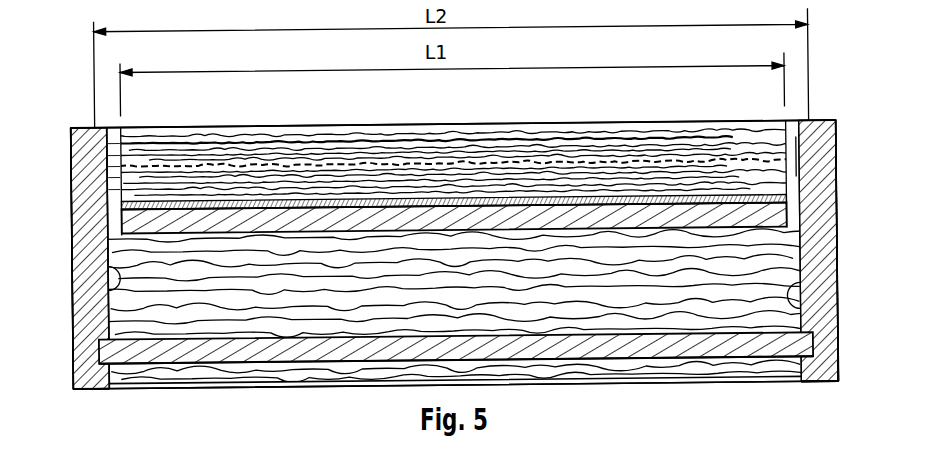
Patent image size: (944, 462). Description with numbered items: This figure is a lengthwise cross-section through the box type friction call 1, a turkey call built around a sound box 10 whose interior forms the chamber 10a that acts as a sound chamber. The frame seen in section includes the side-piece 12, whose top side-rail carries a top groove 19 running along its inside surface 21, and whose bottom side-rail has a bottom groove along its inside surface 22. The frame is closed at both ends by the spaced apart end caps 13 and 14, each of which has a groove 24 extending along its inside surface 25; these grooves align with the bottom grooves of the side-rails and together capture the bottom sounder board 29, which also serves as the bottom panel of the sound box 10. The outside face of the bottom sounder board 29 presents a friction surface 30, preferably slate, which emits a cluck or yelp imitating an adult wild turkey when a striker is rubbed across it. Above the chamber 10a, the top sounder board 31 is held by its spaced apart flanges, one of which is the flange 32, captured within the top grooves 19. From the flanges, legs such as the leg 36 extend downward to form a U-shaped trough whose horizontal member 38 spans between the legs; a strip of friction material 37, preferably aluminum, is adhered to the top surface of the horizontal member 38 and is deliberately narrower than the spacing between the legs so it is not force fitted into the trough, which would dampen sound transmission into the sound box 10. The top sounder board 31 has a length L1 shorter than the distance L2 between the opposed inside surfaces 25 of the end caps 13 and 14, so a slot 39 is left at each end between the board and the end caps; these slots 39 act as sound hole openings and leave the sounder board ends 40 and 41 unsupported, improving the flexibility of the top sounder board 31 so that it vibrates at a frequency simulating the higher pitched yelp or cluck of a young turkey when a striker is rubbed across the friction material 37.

The box type friction call 1 is at (692, 404).
The sound box 10 is at (72, 387).
The chamber 10a is at (496, 305).
The side-piece 12 is at (838, 322).
The end cap 13 is at (72, 330).
The end cap 14 is at (837, 258).
The top groove 19 is at (120, 143).
The inside surface of the top side-rail 21 is at (140, 262).
The inside surface of the bottom side-rail 22 is at (826, 382).
The groove 24 is at (76, 360).
The inside surface of the end cap 25 is at (72, 280).
The bottom sounder board 29 is at (220, 360).
The friction surface 30 is at (200, 362).
The top sounder board 31 is at (557, 165).
The flange 32 is at (143, 155).
The leg 36 is at (377, 185).
The friction material 37 is at (425, 198).
The horizontal member 38 is at (643, 210).
The slot 39 is at (102, 126).
The unsupported sounder board end 40 is at (837, 213).
The unsupported sounder board end 41 is at (105, 215).